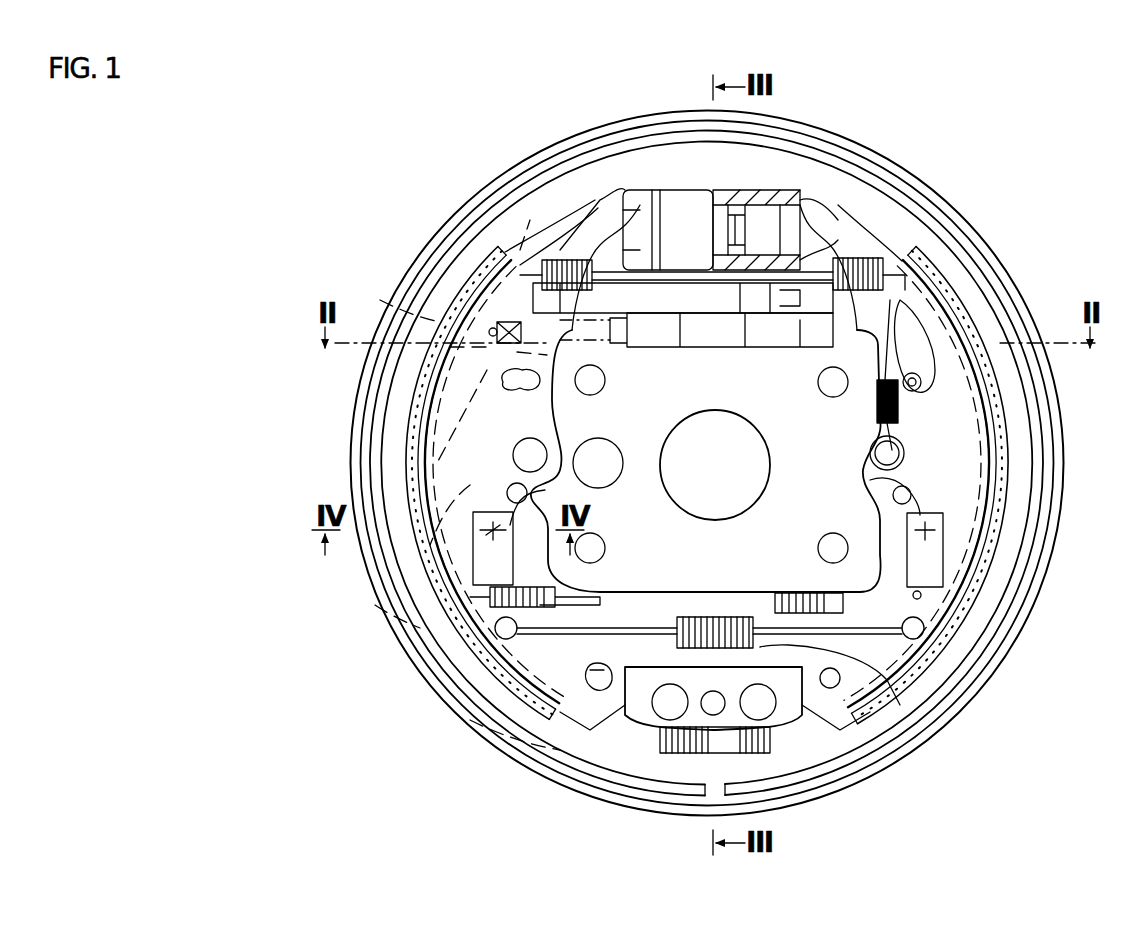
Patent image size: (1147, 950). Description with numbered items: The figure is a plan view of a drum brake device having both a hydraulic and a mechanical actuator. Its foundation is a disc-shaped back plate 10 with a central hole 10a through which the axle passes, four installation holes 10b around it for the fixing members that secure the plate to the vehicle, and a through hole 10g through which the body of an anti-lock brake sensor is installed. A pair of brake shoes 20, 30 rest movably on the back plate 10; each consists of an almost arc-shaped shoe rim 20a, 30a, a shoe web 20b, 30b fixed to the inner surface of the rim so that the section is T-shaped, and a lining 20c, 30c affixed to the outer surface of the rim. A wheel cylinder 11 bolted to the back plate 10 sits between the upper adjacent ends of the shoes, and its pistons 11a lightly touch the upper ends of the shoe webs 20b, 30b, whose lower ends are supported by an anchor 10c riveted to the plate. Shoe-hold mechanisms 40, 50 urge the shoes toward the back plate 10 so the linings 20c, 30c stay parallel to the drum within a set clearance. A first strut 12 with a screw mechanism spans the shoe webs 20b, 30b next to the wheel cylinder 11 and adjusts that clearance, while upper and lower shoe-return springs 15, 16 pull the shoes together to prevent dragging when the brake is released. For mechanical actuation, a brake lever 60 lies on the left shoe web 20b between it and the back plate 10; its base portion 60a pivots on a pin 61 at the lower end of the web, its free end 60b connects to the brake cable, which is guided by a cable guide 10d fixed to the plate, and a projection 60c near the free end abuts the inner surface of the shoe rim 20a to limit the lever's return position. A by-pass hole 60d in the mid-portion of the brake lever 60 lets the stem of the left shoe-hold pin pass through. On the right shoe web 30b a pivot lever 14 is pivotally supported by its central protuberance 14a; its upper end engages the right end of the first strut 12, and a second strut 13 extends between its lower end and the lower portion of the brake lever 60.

The back plate 10 is at (877, 148).
The central hole 10a is at (690, 512).
The installation holes 10b is at (597, 382).
The anchor 10c is at (850, 780).
The cable guide 10d is at (705, 348).
The through hole 10g is at (604, 460).
The wheel cylinder 11 is at (634, 188).
The pistons 11a is at (763, 210).
The first strut 12 is at (768, 283).
The second strut 13 is at (720, 617).
The pivot lever 14 is at (1000, 395).
The protuberance 14a is at (905, 455).
The upper shoe-return spring 15 is at (895, 258).
The lower shoe-return spring 16 is at (927, 728).
The brake shoe 20 is at (480, 272).
The shoe rim 20a is at (470, 300).
The shoe web 20b is at (455, 390).
The lining 20c is at (440, 400).
The brake shoe 30 is at (952, 280).
The shoe rim 30a is at (945, 292).
The shoe web 30b is at (960, 312).
The lining 30c is at (985, 362).
The shoe-hold mechanism 40 is at (470, 560).
The shoe-hold mechanism 50 is at (950, 545).
The brake lever 60 is at (375, 462).
The base portion 60a is at (470, 720).
The free end 60b is at (520, 250).
The projection 60c is at (380, 300).
The by-pass hole 60d is at (375, 605).
The pin 61 is at (605, 668).